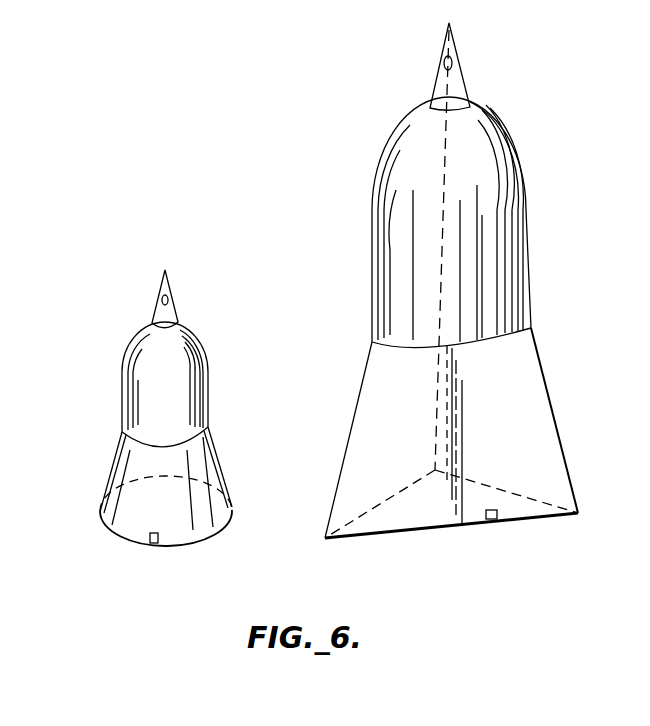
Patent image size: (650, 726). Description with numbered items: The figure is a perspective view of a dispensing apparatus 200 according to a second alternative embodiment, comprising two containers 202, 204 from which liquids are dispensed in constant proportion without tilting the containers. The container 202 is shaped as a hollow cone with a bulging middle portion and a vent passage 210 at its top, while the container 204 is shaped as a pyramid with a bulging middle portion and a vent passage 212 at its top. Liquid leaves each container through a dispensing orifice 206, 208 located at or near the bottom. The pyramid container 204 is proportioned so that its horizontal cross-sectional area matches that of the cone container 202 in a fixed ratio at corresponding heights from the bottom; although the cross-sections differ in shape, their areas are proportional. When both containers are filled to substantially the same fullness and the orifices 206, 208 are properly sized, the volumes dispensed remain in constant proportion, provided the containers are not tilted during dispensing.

The dispensing apparatus 200 is at (112, 37).
The container 202 is at (122, 443).
The container 204 is at (546, 386).
The dispensing orifice 206 is at (154, 543).
The dispensing orifice 208 is at (492, 519).
The vent passage 210 is at (168, 298).
The vent passage 212 is at (452, 62).